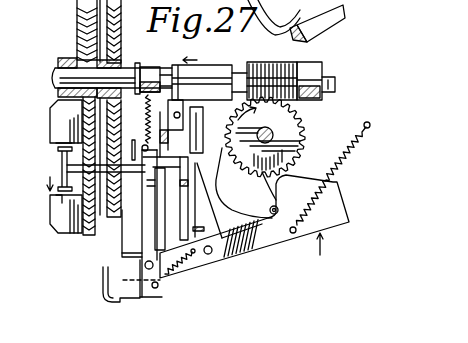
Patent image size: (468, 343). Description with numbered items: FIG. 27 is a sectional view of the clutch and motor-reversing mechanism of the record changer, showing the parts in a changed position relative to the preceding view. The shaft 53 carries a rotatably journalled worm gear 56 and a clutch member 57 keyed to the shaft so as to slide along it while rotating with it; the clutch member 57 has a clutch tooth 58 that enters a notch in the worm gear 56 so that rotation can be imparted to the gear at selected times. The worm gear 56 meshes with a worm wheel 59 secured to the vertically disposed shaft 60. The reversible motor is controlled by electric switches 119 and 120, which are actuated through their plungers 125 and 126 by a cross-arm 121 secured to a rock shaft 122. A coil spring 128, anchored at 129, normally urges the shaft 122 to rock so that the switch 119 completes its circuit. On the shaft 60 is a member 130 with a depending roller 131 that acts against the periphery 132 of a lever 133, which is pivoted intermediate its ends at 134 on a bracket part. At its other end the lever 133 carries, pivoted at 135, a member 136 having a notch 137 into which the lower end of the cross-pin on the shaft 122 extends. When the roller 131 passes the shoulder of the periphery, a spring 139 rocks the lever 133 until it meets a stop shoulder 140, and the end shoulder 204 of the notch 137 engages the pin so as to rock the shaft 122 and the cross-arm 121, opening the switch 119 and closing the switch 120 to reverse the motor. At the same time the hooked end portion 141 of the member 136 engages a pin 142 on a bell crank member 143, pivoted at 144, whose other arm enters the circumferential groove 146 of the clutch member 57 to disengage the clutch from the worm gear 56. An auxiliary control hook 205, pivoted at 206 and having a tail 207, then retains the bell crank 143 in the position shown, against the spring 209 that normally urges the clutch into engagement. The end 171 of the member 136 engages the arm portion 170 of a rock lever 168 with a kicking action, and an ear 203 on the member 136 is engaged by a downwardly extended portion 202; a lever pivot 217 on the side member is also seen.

The shaft 53 is at (52, 73).
The worm gear 56 is at (291, 63).
The clutch member 57 is at (249, 70).
The clutch tooth 58 is at (262, 70).
The worm wheel 59 is at (305, 126).
The shaft 60 is at (300, 139).
The switch 119 is at (58, 116).
The switch 120 is at (50, 220).
The cross-arm 121 is at (58, 149).
The rock shaft 122 is at (66, 168).
The plunger 125 is at (52, 140).
The plunger 126 is at (56, 198).
The coil spring 128 is at (142, 207).
The anchor 129 is at (142, 222).
The member 130 is at (222, 190).
The roller 131 is at (262, 221).
The periphery 132 is at (323, 182).
The lever 133 is at (242, 248).
The pivot 134 is at (208, 254).
The pivot 135 is at (120, 258).
The member 136 is at (122, 250).
The notch 137 is at (156, 190).
The spring 139 is at (350, 162).
The stop shoulder 140 is at (142, 281).
The hooked end portion 141 is at (140, 95).
The pin 142 is at (147, 118).
The bell crank member 143 is at (184, 102).
The pivot 144 is at (203, 113).
The circumferential groove 146 is at (195, 64).
The rock lever 168 is at (103, 288).
The arm portion 170 is at (345, 22).
The end 171 is at (162, 295).
The portion 202 is at (157, 172).
The ear 203 is at (152, 212).
The end shoulder 204 is at (150, 157).
The auxiliary control hook 205 is at (198, 124).
The pivot 206 is at (150, 147).
The tail 207 is at (189, 210).
The spring 209 is at (182, 46).
The pivot 217 is at (205, 228).